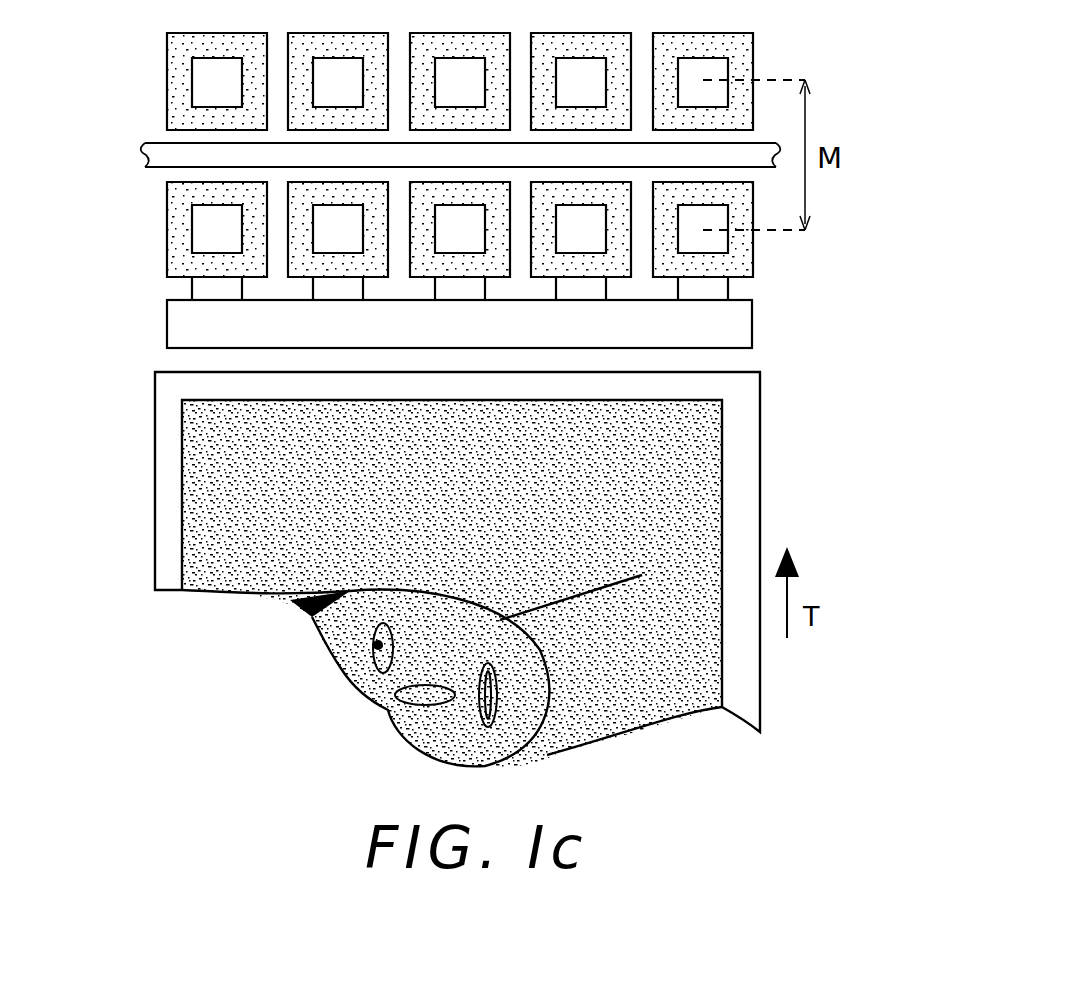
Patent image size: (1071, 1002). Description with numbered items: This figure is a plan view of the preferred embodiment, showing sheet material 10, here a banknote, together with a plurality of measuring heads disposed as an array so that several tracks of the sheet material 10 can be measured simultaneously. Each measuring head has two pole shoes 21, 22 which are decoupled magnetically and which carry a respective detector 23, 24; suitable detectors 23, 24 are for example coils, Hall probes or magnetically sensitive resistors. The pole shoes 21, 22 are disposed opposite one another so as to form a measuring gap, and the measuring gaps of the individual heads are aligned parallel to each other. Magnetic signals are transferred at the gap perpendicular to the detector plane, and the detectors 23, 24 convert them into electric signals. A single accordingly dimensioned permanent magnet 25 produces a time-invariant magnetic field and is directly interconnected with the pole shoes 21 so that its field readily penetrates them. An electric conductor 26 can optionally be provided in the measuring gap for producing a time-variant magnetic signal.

The sheet material 10 is at (705, 490).
The pole shoe 21 is at (207, 228).
The pole shoe 22 is at (208, 80).
The detector 23 is at (735, 262).
The detector 24 is at (735, 45).
The permanent magnet 25 is at (185, 328).
The electric conductor 26 is at (167, 152).